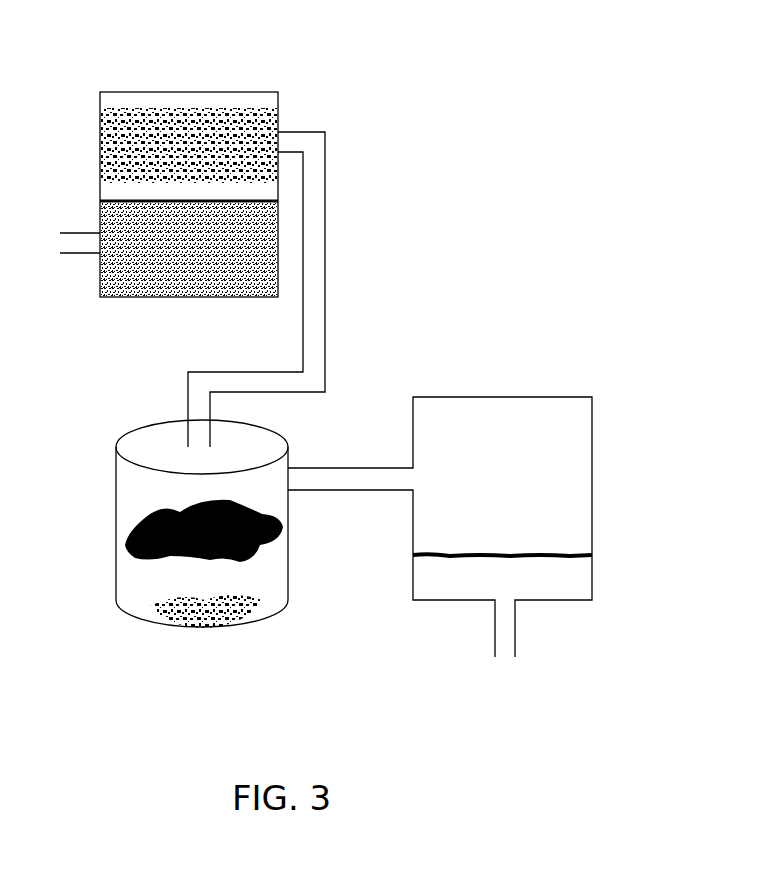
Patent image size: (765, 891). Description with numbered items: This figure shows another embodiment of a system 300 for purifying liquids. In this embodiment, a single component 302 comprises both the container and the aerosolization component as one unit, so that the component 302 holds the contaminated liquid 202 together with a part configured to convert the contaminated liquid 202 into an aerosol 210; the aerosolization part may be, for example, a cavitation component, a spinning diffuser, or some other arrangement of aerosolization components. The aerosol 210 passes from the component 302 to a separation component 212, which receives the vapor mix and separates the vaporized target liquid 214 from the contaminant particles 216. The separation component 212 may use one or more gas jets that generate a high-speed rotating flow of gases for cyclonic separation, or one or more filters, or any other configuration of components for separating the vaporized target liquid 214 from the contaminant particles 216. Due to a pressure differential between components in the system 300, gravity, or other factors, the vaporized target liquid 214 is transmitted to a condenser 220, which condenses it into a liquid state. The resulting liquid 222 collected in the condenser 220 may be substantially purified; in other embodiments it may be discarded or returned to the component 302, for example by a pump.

The system 300 is at (352, 59).
The component 302 is at (165, 70).
The aerosol 210 is at (208, 100).
The contaminated liquid 202 is at (88, 273).
The separation component 212 is at (160, 633).
The vaporized target liquid 214 is at (250, 489).
The contaminant particles 216 is at (245, 635).
The condenser 220 is at (415, 615).
The resulting liquid 222 is at (562, 595).